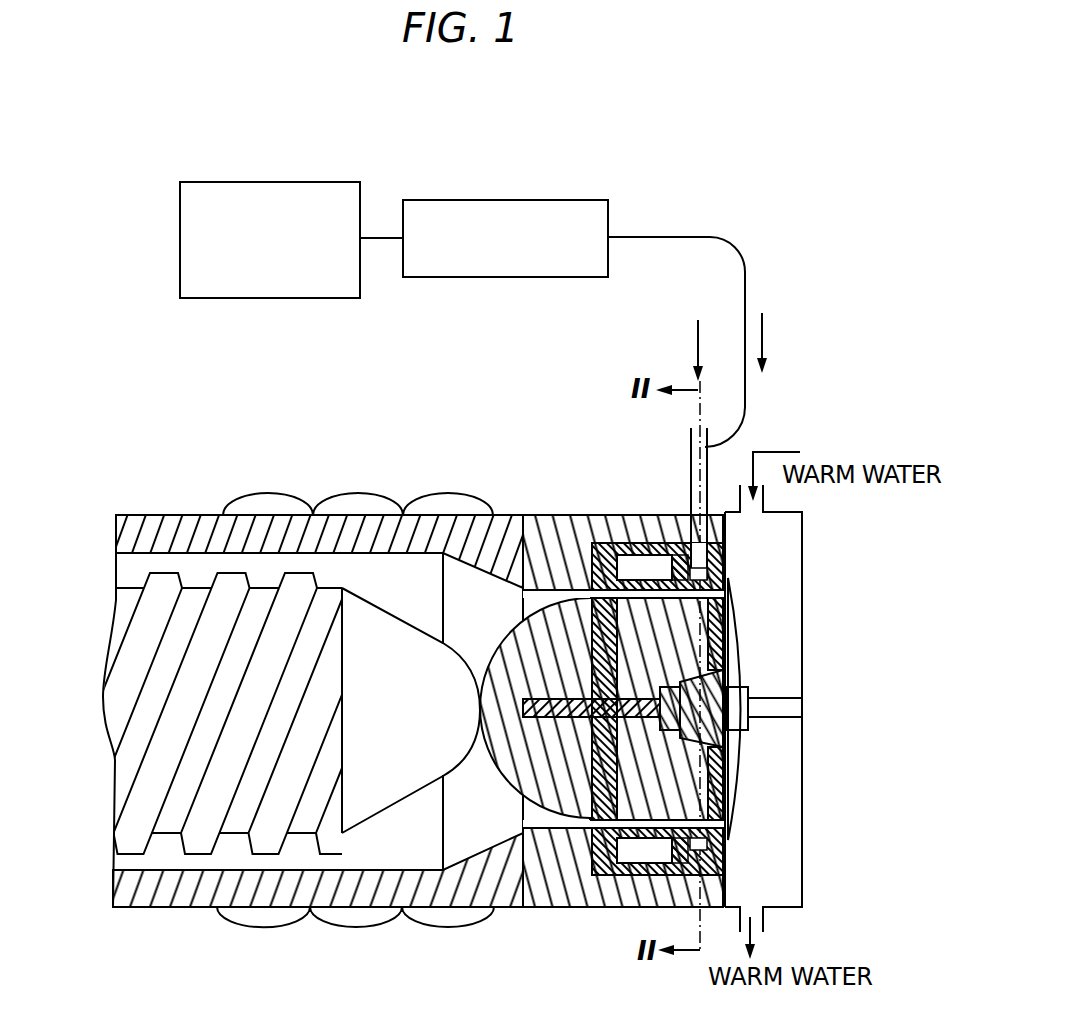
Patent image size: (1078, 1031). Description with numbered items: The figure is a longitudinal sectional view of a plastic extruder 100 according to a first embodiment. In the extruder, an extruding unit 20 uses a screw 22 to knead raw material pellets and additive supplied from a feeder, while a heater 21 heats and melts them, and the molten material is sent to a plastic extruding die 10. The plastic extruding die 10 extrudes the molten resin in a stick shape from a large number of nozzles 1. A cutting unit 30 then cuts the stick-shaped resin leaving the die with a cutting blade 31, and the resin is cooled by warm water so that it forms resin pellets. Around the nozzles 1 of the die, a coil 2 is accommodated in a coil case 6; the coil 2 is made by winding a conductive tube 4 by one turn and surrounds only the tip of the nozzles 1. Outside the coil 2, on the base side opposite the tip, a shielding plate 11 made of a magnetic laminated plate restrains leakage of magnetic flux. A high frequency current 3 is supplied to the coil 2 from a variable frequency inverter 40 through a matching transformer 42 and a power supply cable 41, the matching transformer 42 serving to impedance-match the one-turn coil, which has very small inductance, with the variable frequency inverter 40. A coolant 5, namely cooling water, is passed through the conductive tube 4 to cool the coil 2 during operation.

The nozzles 1 is at (560, 598).
The coil 2 is at (733, 845).
The high frequency current 3 is at (763, 337).
The conductive tube 4 is at (690, 465).
The coolant 5 is at (698, 341).
The coil case 6 is at (592, 543).
The plastic extruding die 10 is at (555, 888).
The shielding plate 11 is at (660, 545).
The extruding unit 20 is at (162, 855).
The heater 21 is at (356, 918).
The screw 22 is at (120, 608).
The cutting unit 30 is at (795, 880).
The cutting blade 31 is at (736, 600).
The variable frequency inverter 40 is at (265, 182).
The power supply cable 41 is at (746, 290).
The matching transformer 42 is at (510, 200).
The plastic extruder 100 is at (300, 462).